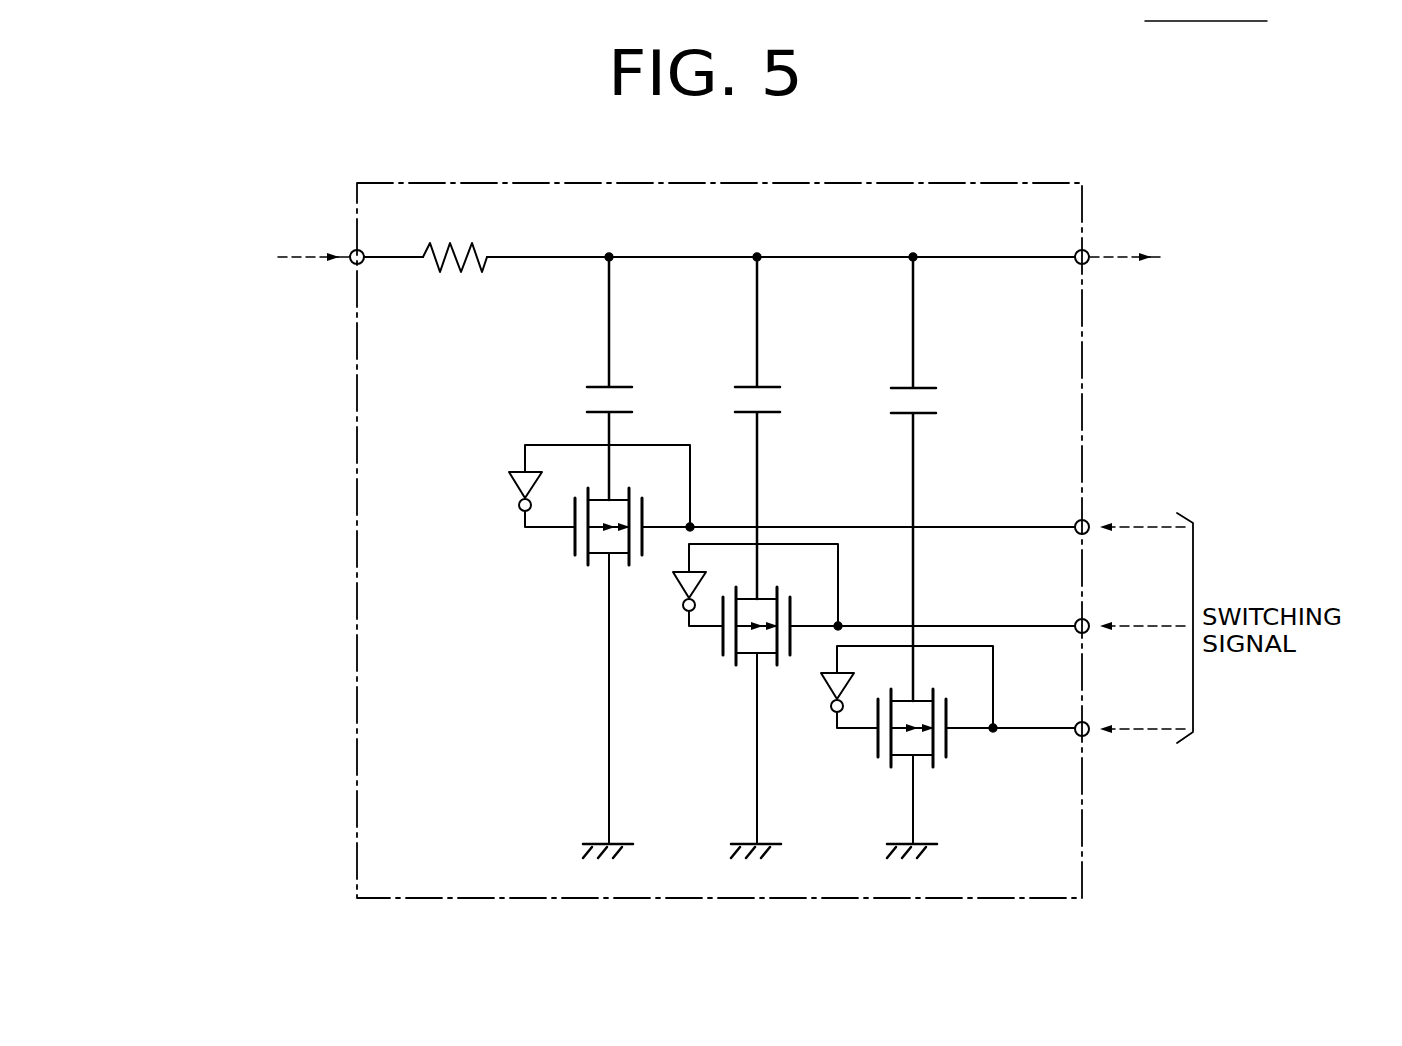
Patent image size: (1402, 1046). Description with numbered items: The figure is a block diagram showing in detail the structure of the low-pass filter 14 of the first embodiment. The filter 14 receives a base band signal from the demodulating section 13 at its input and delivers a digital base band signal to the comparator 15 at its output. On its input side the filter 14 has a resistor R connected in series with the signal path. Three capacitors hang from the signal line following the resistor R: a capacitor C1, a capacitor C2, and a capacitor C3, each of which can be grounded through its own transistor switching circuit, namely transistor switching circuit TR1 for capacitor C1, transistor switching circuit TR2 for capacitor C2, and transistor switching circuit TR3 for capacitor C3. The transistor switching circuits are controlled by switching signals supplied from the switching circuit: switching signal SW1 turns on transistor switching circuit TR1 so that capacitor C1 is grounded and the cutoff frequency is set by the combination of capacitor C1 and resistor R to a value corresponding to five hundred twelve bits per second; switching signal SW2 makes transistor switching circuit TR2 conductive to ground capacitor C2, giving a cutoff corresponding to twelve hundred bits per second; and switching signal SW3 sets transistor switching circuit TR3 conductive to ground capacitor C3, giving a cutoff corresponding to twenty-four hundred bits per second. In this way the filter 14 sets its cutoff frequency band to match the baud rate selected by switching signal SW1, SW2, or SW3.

The low-pass filter 14 is at (697, 185).
The demodulating section 13 is at (215, 252).
The comparator 15 is at (1242, 265).
The resistor R is at (455, 243).
The capacitor C1 is at (616, 378).
The capacitor C2 is at (765, 428).
The capacitor C3 is at (921, 479).
The transistor switching circuit TR1 is at (580, 567).
The transistor switching circuit TR2 is at (725, 665).
The transistor switching circuit TR3 is at (882, 765).
The switching signal SW1 is at (1130, 517).
The switching signal SW2 is at (1130, 617).
The switching signal SW3 is at (1130, 719).